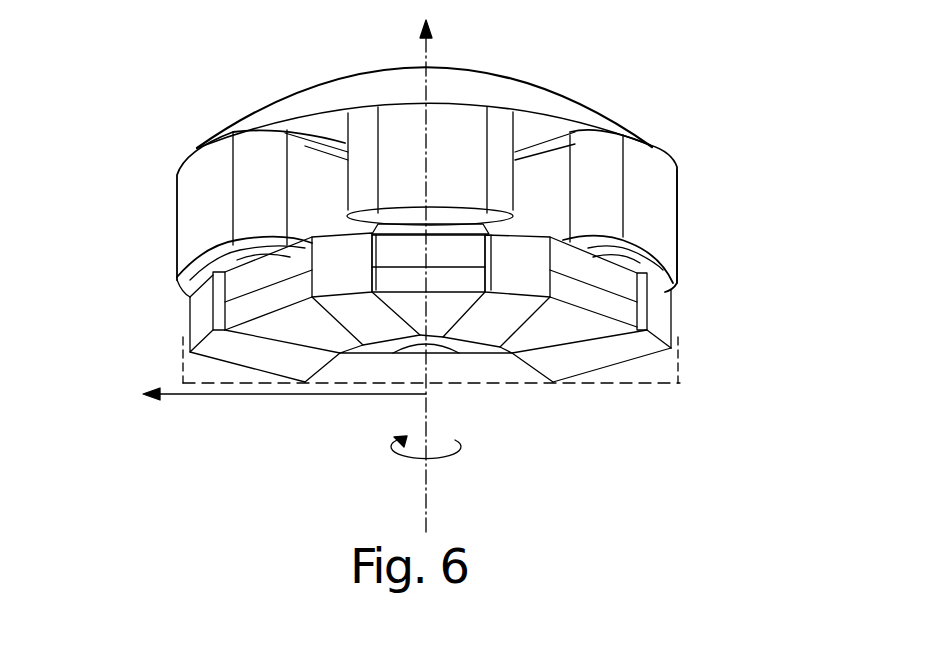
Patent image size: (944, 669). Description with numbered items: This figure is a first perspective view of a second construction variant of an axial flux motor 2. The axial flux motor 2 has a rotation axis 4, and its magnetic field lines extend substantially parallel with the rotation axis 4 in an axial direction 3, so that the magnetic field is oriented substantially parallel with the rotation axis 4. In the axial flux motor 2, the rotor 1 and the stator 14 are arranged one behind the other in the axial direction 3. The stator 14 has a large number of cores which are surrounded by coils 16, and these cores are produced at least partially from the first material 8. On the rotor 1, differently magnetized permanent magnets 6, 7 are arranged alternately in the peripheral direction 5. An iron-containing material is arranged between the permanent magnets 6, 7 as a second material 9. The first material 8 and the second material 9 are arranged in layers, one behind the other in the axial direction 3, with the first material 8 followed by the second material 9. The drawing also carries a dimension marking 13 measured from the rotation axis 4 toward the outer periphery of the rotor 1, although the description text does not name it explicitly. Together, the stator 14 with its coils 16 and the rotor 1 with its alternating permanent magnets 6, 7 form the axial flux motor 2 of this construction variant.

The rotor 1 is at (645, 372).
The axial flux motor 2 is at (662, 80).
The axial direction 3 is at (440, 286).
The rotation axis 4 is at (415, 21).
The peripheral direction 5 is at (430, 464).
The permanent magnet 6 is at (203, 307).
The permanent magnet 7 is at (350, 322).
The first material 8 is at (250, 275).
The second material 9 is at (560, 330).
The radius 13 is at (284, 407).
The stator 14 is at (685, 163).
The coils 16 is at (660, 210).